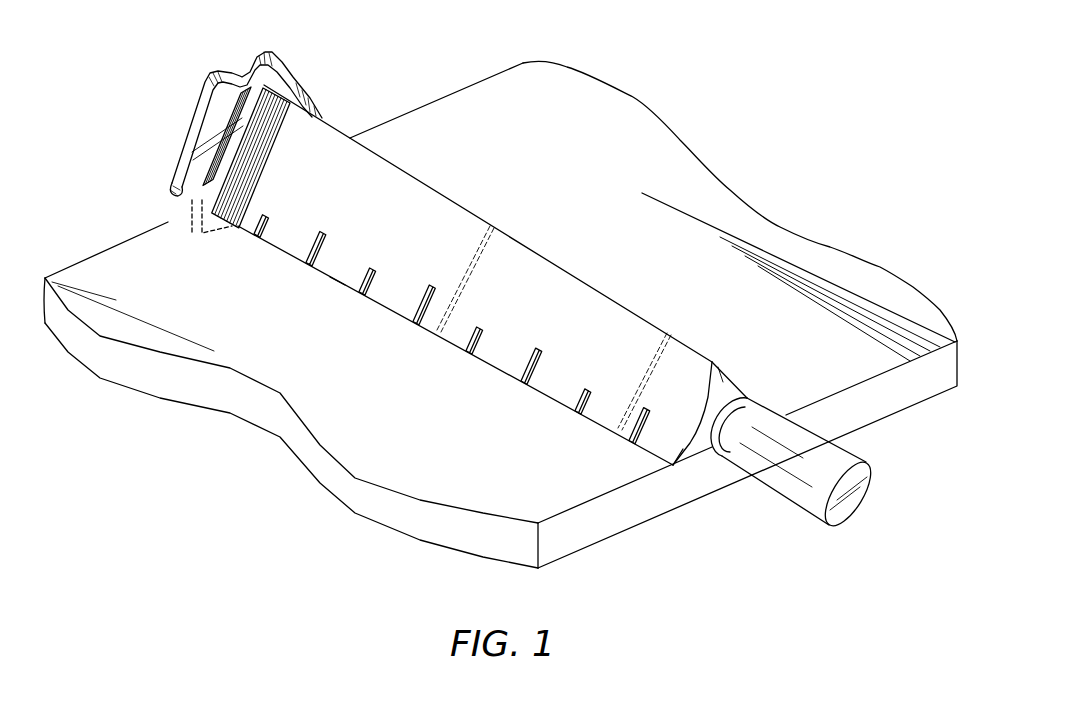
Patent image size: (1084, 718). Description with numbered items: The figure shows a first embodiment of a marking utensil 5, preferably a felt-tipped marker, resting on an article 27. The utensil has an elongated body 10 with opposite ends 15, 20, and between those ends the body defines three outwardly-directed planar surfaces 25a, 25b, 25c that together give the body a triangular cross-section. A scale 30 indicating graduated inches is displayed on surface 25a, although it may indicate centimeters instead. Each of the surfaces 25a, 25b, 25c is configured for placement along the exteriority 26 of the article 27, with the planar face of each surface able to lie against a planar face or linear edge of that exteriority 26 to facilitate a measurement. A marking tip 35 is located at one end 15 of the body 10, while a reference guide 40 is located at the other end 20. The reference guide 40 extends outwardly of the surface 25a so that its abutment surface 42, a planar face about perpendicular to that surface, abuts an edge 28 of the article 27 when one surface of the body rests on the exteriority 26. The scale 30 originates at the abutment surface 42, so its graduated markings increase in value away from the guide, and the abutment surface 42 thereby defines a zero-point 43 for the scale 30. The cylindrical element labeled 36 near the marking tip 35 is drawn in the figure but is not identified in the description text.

The marking utensil 5 is at (528, 186).
The elongated body 10 is at (552, 250).
The end of body 15 is at (734, 473).
The end of body 20 is at (186, 229).
The planar surface 25a is at (458, 217).
The planar surface 25b is at (335, 280).
The planar surface 25c is at (612, 297).
The exteriority of the article 26 is at (500, 450).
The article 27 is at (831, 252).
The edge of the article 28 is at (463, 88).
The scale 30 is at (246, 238).
The marking tip 35 is at (754, 393).
The handle rod 36 is at (842, 458).
The reference guide 40 is at (196, 186).
The abutment surface 42 is at (287, 85).
The zero-point 43 is at (218, 177).